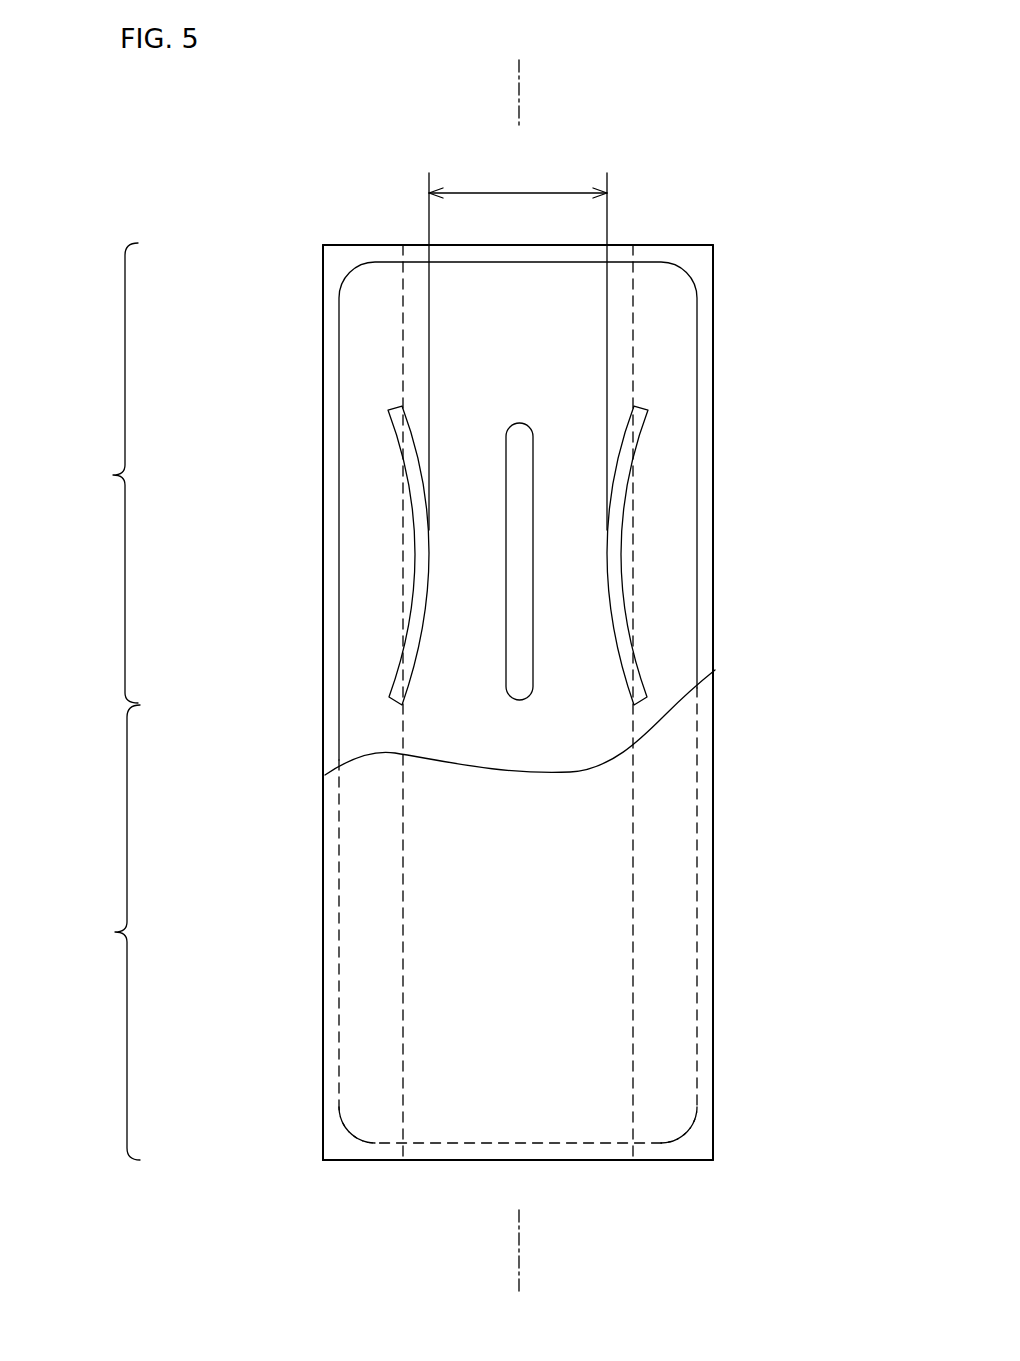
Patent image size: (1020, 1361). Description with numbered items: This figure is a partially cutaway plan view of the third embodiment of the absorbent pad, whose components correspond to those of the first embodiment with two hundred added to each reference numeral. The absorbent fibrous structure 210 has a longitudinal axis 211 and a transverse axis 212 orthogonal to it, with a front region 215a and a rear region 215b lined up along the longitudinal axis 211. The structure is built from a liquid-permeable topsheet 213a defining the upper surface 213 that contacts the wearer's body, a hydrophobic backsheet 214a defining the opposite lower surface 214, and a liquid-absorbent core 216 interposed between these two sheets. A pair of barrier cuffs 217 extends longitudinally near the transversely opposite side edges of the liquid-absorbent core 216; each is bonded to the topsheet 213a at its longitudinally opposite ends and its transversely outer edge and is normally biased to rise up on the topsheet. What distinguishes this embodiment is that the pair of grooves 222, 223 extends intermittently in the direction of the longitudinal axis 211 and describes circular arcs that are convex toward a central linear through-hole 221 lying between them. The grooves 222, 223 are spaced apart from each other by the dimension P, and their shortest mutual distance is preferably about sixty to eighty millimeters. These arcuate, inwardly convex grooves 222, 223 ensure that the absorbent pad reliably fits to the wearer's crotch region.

The absorbent fibrous structure 210 is at (703, 142).
The longitudinal axis 211 is at (527, 678).
The transverse axis 212 is at (798, 703).
The upper surface 213 is at (334, 833).
The liquid-permeable topsheet 213a is at (325, 298).
The lower surface 214 is at (332, 874).
The hydrophobic backsheet 214a is at (332, 1007).
The front region 215a is at (84, 473).
The rear region 215b is at (84, 932).
The liquid-absorbent core 216 is at (356, 352).
The barrier cuffs 217 is at (373, 1148).
The linear through-hole 221 is at (522, 677).
The groove 222 is at (423, 593).
The groove 223 is at (613, 603).
The spacing dimension between grooves P is at (525, 193).